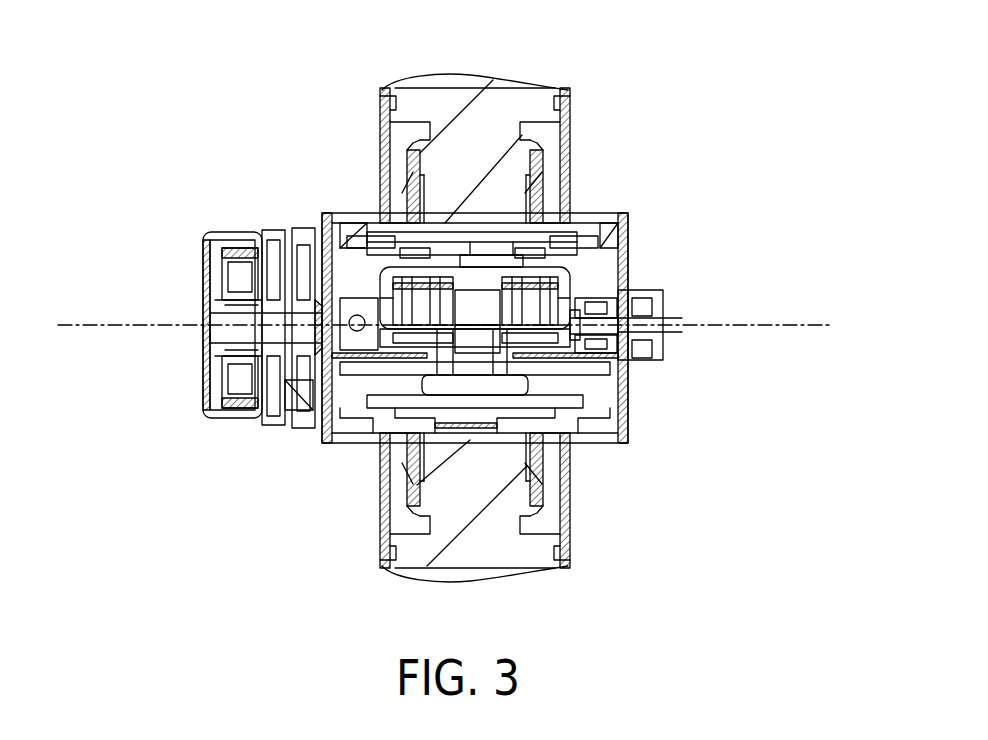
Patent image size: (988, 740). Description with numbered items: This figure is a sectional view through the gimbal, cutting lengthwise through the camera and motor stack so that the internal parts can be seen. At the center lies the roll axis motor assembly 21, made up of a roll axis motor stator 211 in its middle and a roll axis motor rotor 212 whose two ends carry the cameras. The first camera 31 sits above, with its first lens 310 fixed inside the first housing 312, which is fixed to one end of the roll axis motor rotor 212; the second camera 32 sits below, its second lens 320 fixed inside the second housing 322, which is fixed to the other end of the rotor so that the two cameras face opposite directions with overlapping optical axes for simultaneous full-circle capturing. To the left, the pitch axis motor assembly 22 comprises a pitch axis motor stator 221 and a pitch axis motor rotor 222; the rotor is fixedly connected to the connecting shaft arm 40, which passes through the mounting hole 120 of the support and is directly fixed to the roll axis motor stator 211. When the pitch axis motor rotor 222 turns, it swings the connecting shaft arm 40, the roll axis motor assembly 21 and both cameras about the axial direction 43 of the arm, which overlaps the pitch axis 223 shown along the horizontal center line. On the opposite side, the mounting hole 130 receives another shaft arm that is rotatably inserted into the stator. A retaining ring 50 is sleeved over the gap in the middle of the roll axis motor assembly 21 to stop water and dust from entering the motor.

The roll axis motor assembly 21 is at (843, 375).
The roll axis motor stator 211 is at (520, 349).
The roll axis motor rotor 212 is at (598, 343).
The pitch axis motor assembly 22 is at (80, 212).
The pitch axis motor stator 221 is at (286, 277).
The pitch axis motor rotor 222 is at (223, 299).
The pitch axis 223 is at (741, 323).
The axial direction of the connecting shaft arm 43 is at (788, 270).
The first camera 31 is at (770, 18).
The first lens 310 is at (555, 97).
The first housing 312 is at (568, 152).
The second camera 32 is at (770, 500).
The second lens 320 is at (512, 548).
The second housing 322 is at (570, 482).
The connecting shaft arm 40 is at (305, 333).
The retaining ring 50 is at (596, 327).
The mounting hole 120 is at (303, 378).
The mounting hole 130 is at (622, 300).